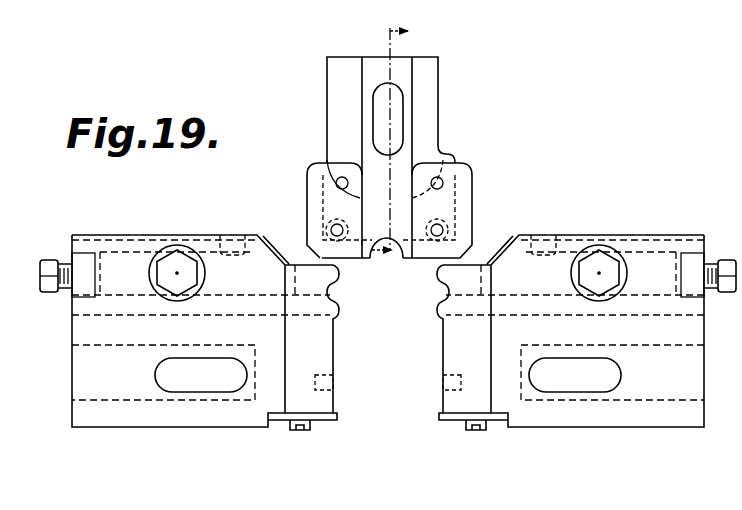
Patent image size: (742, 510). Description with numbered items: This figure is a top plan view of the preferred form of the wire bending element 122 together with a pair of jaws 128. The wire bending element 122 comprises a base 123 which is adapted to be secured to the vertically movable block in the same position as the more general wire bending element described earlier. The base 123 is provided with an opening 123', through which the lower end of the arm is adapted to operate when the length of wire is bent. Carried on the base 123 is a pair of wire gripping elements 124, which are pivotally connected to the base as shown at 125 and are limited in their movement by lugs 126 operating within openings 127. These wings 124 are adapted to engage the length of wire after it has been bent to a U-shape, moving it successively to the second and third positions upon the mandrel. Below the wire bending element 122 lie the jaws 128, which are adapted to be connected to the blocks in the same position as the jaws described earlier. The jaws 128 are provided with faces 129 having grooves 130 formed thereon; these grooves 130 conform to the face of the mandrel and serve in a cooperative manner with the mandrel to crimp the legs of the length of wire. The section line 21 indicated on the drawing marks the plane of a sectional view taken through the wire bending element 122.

The section line 21- 21 is at (390, 144).
The wire bending element 122 is at (428, 130).
The base 123 is at (443, 93).
The opening 123' is at (461, 216).
The wire gripping elements 124 is at (322, 182).
The pivotal connection 125 is at (441, 180).
The lugs 126 is at (445, 229).
The openings 127 is at (450, 233).
The jaws 128 is at (178, 429).
The faces 129 is at (450, 356).
The grooves 130 is at (440, 283).